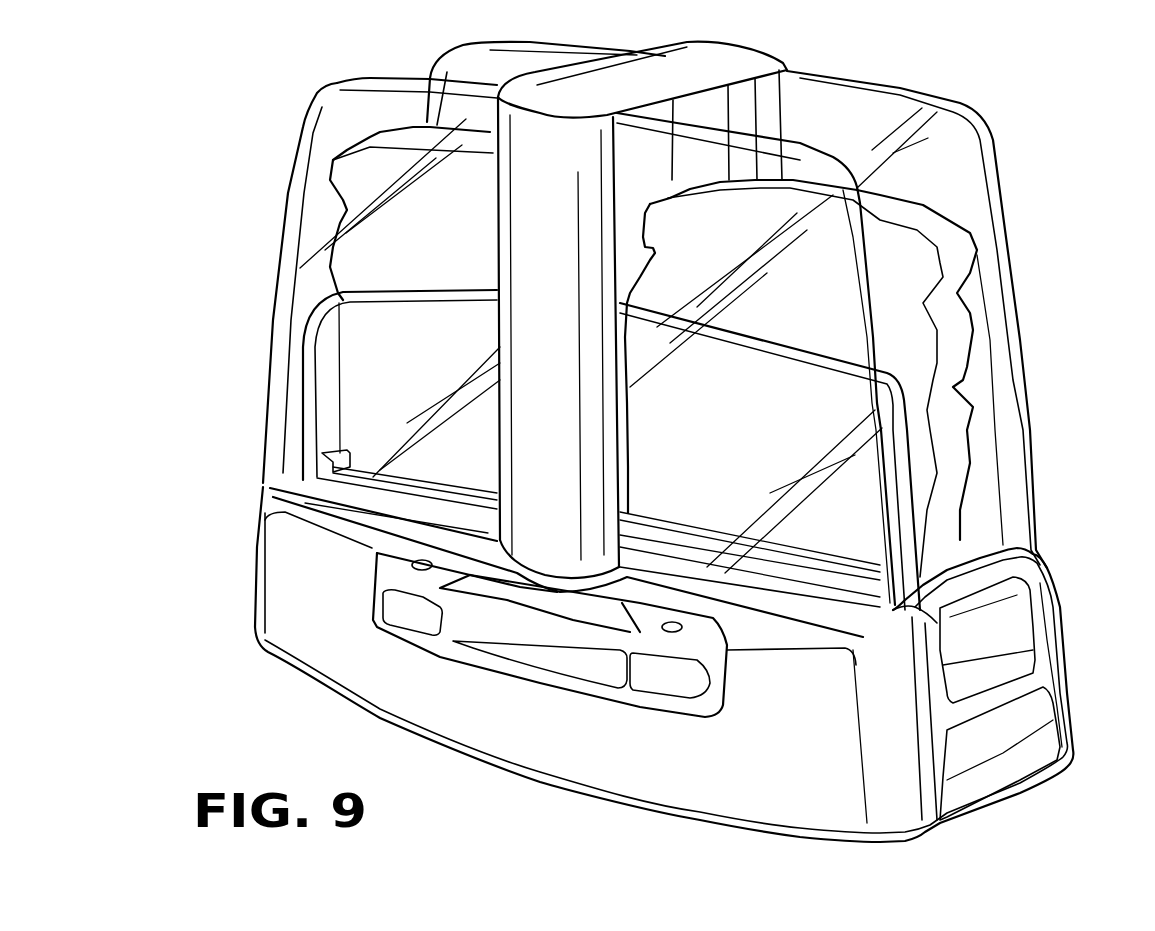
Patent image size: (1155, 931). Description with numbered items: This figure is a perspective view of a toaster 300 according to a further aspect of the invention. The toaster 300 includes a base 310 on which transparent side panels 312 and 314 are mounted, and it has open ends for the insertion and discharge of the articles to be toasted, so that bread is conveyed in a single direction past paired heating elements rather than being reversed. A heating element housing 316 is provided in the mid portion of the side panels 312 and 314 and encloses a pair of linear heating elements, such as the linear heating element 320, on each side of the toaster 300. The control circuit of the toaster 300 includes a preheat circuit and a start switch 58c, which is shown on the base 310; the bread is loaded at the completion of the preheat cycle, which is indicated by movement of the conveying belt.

The toaster 300 is at (250, 455).
The base 310 is at (273, 594).
The transparent side panel 312 is at (323, 132).
The transparent side panel 314 is at (987, 123).
The heating element housing 316 is at (535, 511).
The linear heating element 320 is at (743, 105).
The start switch 58c is at (423, 615).